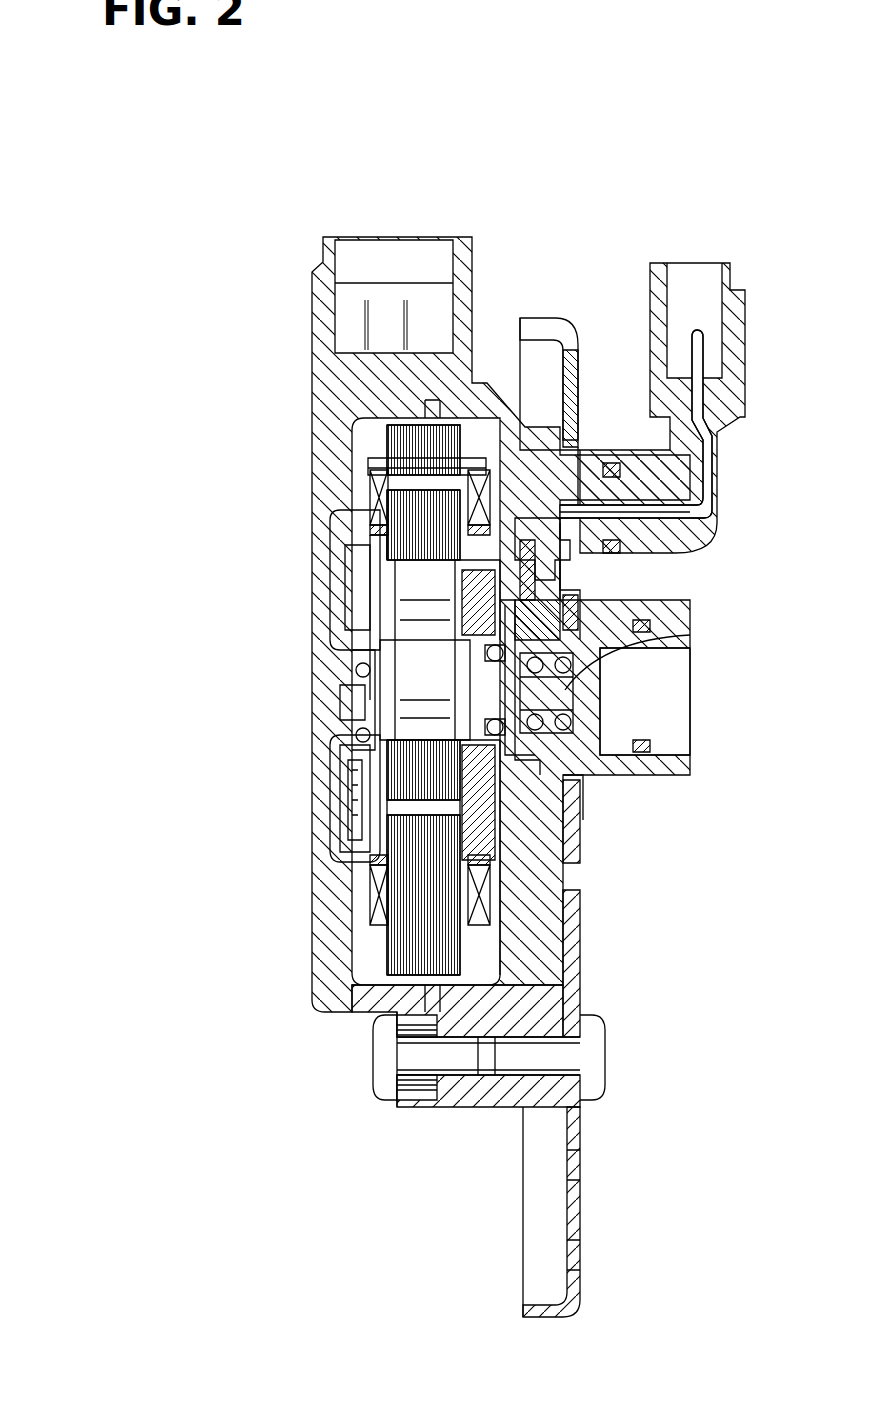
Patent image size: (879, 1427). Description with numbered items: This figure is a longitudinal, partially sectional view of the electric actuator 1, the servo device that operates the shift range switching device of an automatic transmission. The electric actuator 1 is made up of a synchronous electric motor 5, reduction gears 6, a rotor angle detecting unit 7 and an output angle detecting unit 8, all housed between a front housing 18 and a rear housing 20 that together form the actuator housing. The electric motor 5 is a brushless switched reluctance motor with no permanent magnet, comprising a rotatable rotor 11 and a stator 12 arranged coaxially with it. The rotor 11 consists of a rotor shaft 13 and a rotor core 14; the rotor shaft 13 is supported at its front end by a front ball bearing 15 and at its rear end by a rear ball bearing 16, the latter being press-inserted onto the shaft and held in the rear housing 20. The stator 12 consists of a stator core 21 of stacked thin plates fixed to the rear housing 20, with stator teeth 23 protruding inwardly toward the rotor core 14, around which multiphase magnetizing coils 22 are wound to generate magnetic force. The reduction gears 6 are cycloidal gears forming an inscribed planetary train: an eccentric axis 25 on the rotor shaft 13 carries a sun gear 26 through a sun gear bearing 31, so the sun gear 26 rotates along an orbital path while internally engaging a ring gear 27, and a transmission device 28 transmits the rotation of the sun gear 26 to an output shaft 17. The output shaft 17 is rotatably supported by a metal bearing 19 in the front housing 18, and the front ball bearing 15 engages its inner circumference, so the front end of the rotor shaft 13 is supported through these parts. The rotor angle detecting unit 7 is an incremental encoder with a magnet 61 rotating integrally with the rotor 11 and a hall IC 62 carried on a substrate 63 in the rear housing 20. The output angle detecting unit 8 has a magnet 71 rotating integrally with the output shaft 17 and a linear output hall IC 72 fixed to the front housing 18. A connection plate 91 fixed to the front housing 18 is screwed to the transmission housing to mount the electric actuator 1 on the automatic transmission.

The electric actuator 1 is at (258, 266).
The electric motor 5 is at (182, 462).
The reduction gears 6 is at (650, 792).
The rotor angle detecting unit 7 is at (238, 733).
The output angle detecting unit 8 is at (609, 258).
The rotor 11 is at (236, 527).
The stator 12 is at (236, 412).
The rotor shaft 13 is at (397, 612).
The rotor core 14 is at (385, 555).
The front ball bearing 15 is at (585, 635).
The rear ball bearing 16 is at (425, 662).
The output shaft 17 is at (583, 780).
The front housing 18 is at (545, 1000).
The metal bearing 19 is at (648, 635).
The rear housing 20 is at (332, 962).
The stator core 21 is at (400, 438).
The magnetizing coils 22 is at (380, 488).
The stator teeth 23 is at (395, 470).
The eccentric axis 25 is at (560, 812).
The sun gear 26 is at (555, 890).
The ring gear 27 is at (580, 930).
The transmission device 28 is at (565, 853).
The sun gear bearing 31 is at (600, 690).
The magnet 61 is at (365, 758).
The hall IC 62 is at (372, 800).
The substrate 63 is at (372, 808).
The magnet 71 is at (598, 468).
The linear output hall IC 72 is at (553, 468).
The connection plate 91 is at (570, 1168).